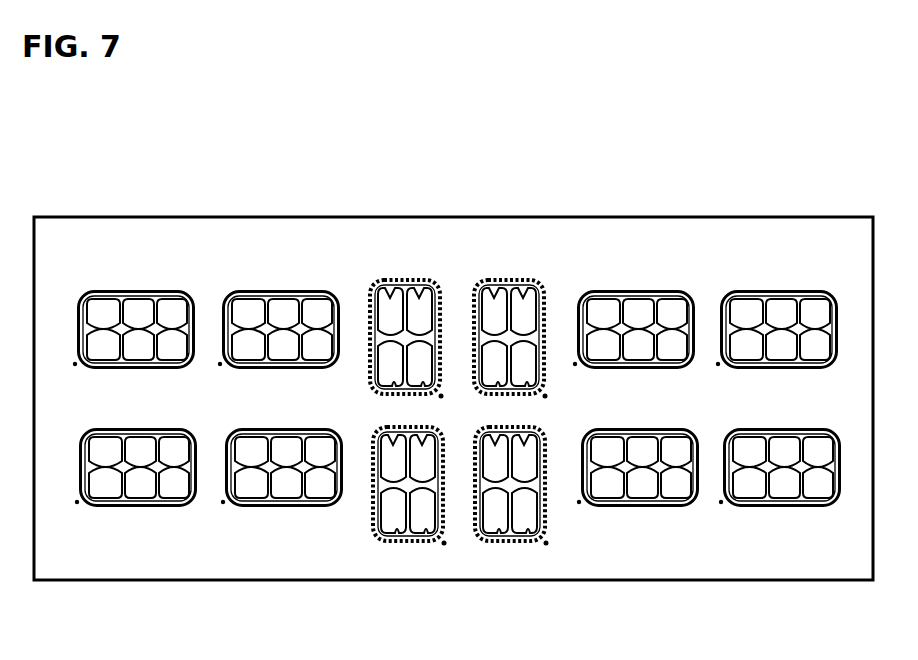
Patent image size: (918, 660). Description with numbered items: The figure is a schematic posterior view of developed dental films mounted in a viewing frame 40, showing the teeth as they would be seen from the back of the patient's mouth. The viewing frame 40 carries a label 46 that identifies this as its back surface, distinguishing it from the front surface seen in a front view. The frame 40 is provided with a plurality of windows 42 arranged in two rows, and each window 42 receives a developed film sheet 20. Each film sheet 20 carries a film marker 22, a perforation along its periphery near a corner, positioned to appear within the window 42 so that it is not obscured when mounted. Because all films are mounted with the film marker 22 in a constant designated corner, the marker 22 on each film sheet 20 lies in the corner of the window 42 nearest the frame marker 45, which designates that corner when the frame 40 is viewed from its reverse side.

The viewing frame 40 is at (163, 582).
The label 46 is at (437, 240).
The window 42 is at (650, 290).
The film sheet 20 is at (665, 502).
The film marker 22 is at (430, 530).
The frame marker 45 is at (545, 542).